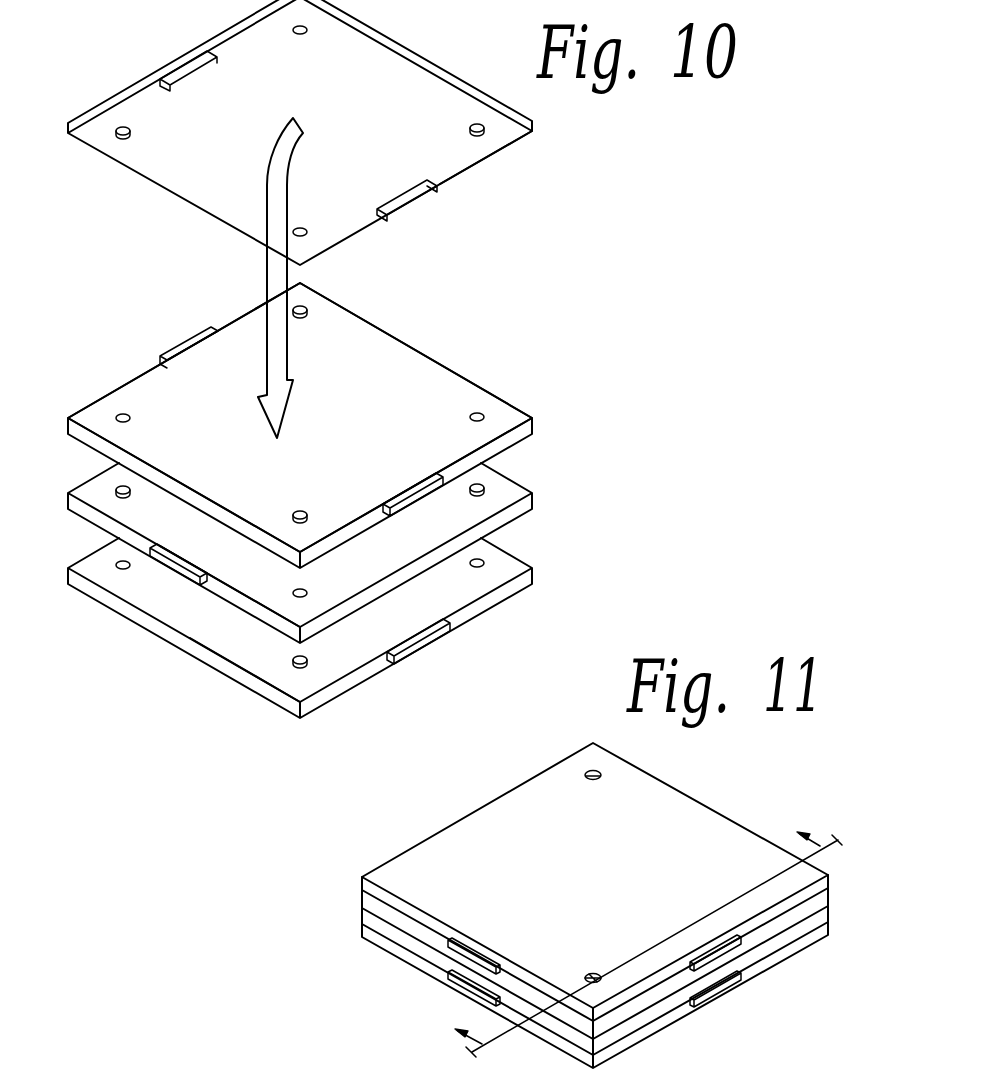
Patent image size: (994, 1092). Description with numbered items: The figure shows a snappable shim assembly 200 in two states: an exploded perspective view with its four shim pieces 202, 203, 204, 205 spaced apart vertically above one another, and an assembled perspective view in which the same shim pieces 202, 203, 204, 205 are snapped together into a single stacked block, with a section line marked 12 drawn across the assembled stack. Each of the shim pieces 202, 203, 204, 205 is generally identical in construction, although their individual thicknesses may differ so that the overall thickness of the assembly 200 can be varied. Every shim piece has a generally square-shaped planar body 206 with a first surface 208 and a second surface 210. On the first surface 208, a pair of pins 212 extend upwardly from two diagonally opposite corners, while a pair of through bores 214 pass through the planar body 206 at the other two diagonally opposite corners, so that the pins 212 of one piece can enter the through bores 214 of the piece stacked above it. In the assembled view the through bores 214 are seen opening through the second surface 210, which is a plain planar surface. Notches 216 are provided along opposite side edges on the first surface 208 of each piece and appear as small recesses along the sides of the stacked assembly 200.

In FIG. 10, the snappable shim assembly 200 is at (618, 198).
In FIG. 11, the snappable shim assembly 200 is at (453, 794).
In FIG. 10, the shim piece 202 is at (535, 155).
In FIG. 11, the shim piece 202 is at (370, 890).
In FIG. 10, the shim piece 203 is at (524, 359).
In FIG. 11, the shim piece 203 is at (372, 900).
In FIG. 10, the shim piece 204 is at (557, 465).
In FIG. 11, the shim piece 204 is at (375, 920).
In FIG. 10, the shim piece 205 is at (564, 548).
In FIG. 11, the shim piece 205 is at (458, 938).
In FIG. 10, the planar body 206 is at (433, 370).
In FIG. 10, the first surface 208 is at (465, 160).
In FIG. 11, the second surface 210 is at (695, 808).
In FIG. 10, the pins 212 is at (131, 134).
In FIG. 10, the through bores 214 is at (302, 36).
In FIG. 11, the through bores 214 is at (593, 782).
In FIG. 10, the notches 216 is at (190, 354).
In FIG. 11, the notches 216 is at (740, 950).
In FIG. 11, the section line 12- 12 is at (632, 932).